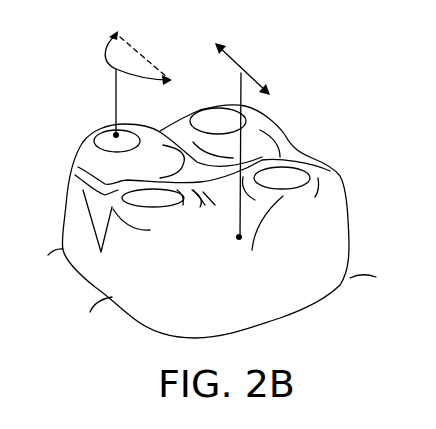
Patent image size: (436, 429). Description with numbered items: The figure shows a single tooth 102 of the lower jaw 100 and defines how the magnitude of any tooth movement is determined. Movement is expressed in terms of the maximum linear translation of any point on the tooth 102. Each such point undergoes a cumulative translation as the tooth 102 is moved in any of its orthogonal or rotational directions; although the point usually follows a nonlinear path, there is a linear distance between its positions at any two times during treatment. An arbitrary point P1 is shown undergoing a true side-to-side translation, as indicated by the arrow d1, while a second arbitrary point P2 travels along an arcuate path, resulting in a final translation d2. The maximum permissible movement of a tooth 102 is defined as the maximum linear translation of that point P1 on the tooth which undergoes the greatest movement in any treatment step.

The lower jaw 100 is at (435, 141).
The tooth 102 is at (312, 217).
The arbitrary point P1 is at (236, 238).
The second arbitrary point P2 is at (110, 128).
The arrow d1 is at (242, 137).
The final translation d2 is at (138, 81).